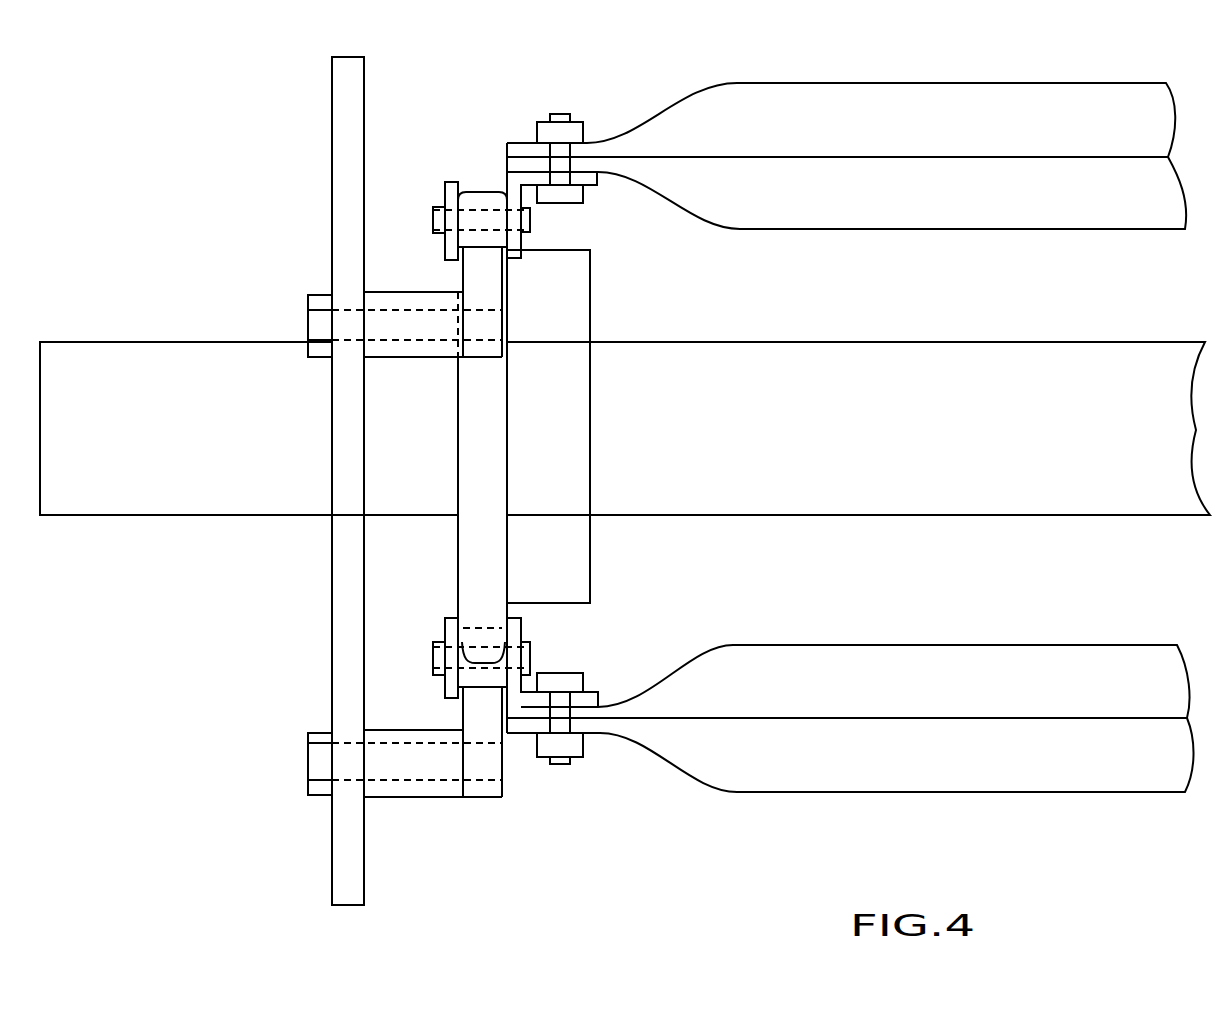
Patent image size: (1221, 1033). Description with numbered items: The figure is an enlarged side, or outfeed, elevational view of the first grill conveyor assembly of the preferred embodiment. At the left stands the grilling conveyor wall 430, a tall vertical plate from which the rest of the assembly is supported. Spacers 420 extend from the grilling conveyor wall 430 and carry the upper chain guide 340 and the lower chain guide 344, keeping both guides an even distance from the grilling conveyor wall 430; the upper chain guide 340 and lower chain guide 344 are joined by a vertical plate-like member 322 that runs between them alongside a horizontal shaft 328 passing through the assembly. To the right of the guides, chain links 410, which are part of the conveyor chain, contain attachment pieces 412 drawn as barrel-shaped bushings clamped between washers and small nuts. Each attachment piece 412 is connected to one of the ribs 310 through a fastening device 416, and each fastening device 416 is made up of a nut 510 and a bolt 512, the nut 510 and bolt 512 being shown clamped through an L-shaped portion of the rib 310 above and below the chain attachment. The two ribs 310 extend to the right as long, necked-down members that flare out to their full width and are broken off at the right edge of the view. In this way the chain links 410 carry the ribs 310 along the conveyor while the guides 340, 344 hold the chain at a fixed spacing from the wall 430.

The rib 310 is at (1107, 100).
The support plate 322 is at (481, 573).
The shaft 328 is at (163, 362).
The upper chain guide 340 is at (481, 291).
The lower chain guide 344 is at (483, 790).
The chain link 410 is at (444, 193).
The attachment piece 412 is at (513, 185).
The fastening device 416 is at (582, 119).
The spacer 420 is at (412, 360).
The grilling conveyor wall 430 is at (340, 858).
The nut 510 is at (537, 130).
The bolt 512 is at (560, 205).